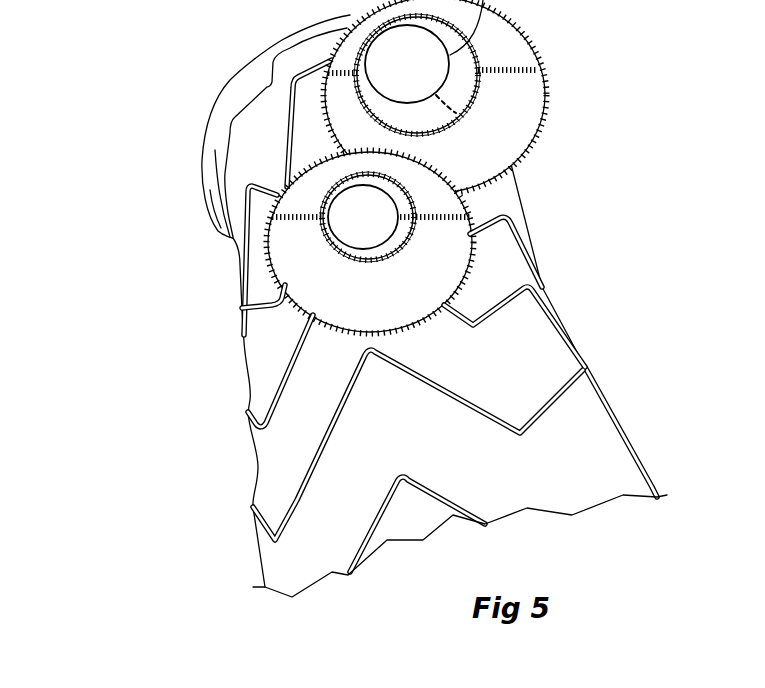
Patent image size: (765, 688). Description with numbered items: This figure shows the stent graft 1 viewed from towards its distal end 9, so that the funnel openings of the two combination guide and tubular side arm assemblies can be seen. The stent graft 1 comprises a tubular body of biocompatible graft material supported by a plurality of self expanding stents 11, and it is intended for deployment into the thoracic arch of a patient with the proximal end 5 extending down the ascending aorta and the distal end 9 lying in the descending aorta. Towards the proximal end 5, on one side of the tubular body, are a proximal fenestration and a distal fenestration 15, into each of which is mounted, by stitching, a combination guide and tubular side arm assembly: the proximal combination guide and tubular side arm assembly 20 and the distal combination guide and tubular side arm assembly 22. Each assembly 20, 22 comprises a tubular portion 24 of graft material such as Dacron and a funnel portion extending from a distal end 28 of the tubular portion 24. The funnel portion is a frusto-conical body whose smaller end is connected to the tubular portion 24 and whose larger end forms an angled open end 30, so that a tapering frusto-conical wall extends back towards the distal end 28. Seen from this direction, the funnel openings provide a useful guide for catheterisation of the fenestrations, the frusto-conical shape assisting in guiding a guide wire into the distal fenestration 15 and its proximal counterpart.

The stent graft 1 is at (100, 171).
The proximal end 5 is at (230, 75).
The distal end 9 is at (527, 487).
The self expanding stents 11 is at (295, 350).
The distal fenestration 15 is at (270, 220).
The proximal combination guide and tubular side arm assembly 20 is at (480, 97).
The distal combination guide and tubular side arm assembly 22 is at (492, 201).
The tubular portion 24 is at (425, 115).
The distal end of the tubular portion 28 is at (497, 65).
The angled open end 30 is at (547, 115).